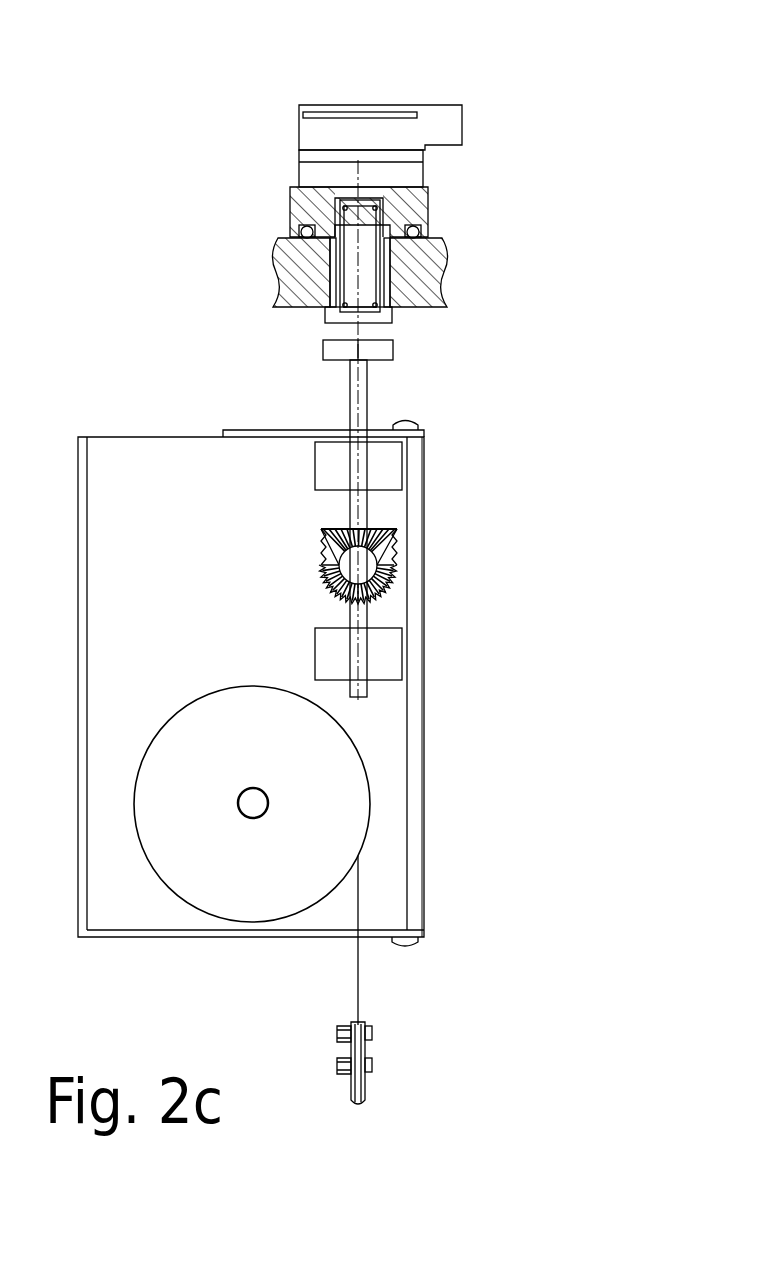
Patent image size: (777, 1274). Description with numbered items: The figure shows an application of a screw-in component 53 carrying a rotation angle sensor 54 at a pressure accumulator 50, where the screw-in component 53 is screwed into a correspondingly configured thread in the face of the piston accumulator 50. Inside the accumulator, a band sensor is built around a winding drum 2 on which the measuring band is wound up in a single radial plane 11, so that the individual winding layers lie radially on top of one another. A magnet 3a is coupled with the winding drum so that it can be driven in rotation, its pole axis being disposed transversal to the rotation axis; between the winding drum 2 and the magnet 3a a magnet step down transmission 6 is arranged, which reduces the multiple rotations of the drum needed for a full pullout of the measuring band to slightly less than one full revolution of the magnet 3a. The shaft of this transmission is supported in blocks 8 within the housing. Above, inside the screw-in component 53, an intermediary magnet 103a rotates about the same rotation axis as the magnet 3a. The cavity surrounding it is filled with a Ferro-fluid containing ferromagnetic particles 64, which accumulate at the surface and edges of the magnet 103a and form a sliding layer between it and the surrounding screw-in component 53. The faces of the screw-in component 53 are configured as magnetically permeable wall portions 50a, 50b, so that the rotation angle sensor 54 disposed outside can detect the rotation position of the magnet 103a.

The rotation angle sensor 54 is at (288, 101).
The magnetically permeable wall portion 50b is at (340, 188).
The screw-in component 53 is at (290, 191).
The piston accumulator 50 is at (265, 228).
The magnetically permeable wall portion 50a is at (336, 312).
The ferromagnetic particles 64 is at (398, 192).
The intermediary magnet 103a is at (397, 283).
The magnet 3a is at (409, 350).
The magnet step down transmission 6 is at (403, 530).
The bearing block 8 is at (413, 624).
The winding drum 2 is at (383, 800).
The single radial plane 11 is at (252, 804).